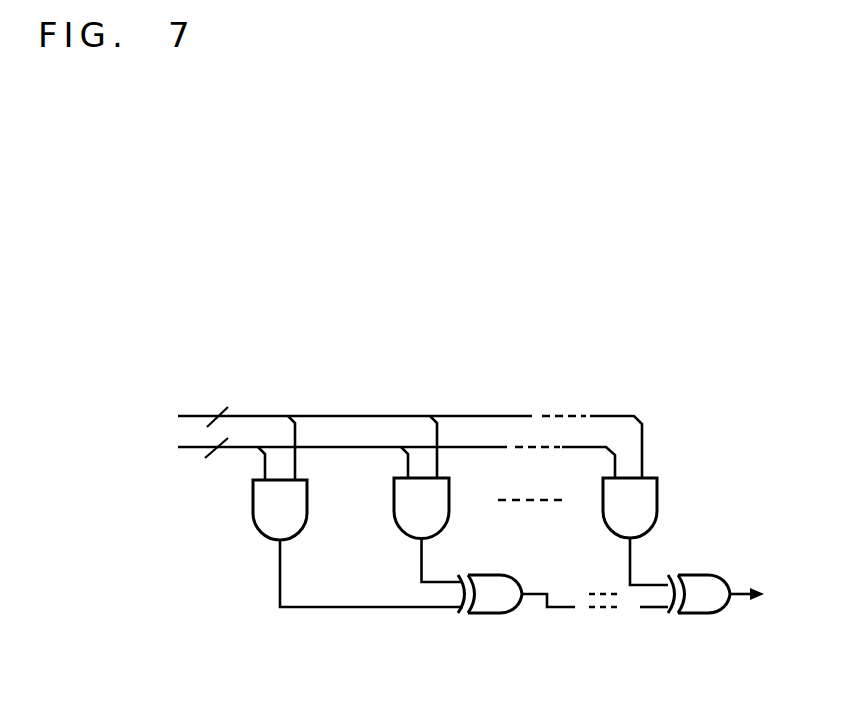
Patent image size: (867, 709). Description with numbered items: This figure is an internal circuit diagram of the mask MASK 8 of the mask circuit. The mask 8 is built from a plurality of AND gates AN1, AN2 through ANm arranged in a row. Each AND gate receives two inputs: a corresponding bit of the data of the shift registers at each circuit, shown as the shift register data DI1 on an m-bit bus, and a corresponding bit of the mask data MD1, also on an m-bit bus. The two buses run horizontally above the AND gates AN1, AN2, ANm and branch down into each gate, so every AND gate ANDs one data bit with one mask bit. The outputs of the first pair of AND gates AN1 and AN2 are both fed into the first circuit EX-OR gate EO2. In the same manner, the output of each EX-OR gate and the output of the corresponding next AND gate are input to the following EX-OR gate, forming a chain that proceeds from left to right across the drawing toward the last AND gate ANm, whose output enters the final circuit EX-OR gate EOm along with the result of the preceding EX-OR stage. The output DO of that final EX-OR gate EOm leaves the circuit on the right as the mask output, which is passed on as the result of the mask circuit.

The mask 8 is at (686, 334).
The shift register data DI1 is at (384, 434).
The mask data MD1 is at (375, 450).
The AND gate AN1 is at (329, 543).
The AND gate AN2 is at (400, 530).
The AND gate ANm is at (656, 531).
The first circuit EX-OR gate EO2 is at (516, 615).
The final circuit EX-OR gate EOm is at (685, 615).
The mask output DO is at (764, 585).